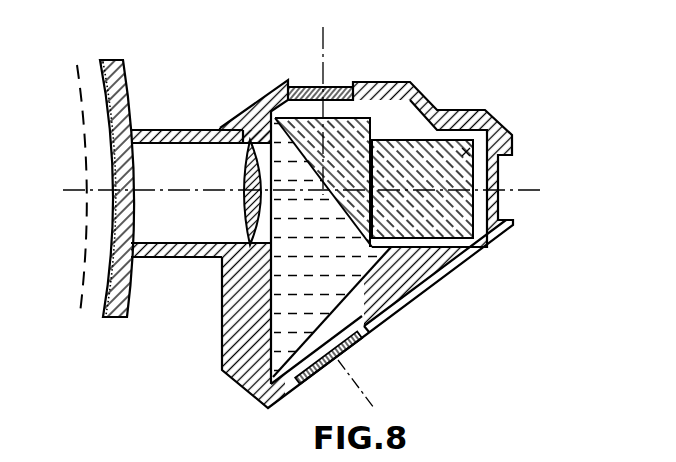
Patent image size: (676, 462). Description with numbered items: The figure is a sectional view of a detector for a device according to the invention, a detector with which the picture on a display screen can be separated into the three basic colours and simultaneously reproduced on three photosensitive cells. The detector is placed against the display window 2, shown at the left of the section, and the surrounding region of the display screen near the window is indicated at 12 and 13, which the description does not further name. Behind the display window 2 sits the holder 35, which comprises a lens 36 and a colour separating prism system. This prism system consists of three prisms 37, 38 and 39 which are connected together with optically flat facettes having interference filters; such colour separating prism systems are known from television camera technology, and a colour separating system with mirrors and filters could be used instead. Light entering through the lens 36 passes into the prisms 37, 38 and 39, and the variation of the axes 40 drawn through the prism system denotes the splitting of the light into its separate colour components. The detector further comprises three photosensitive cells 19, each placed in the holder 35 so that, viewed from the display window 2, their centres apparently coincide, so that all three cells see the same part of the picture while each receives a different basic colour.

The display window 2 is at (124, 70).
The object surface 12 is at (78, 94).
The coating on window 13 is at (102, 61).
The photosensitive cells 19 is at (312, 86).
The holder 35 is at (160, 258).
The lens 36 is at (245, 210).
The prism 37 is at (308, 340).
The prism 38 is at (364, 120).
The prism 39 is at (465, 153).
The axes 40 is at (155, 194).